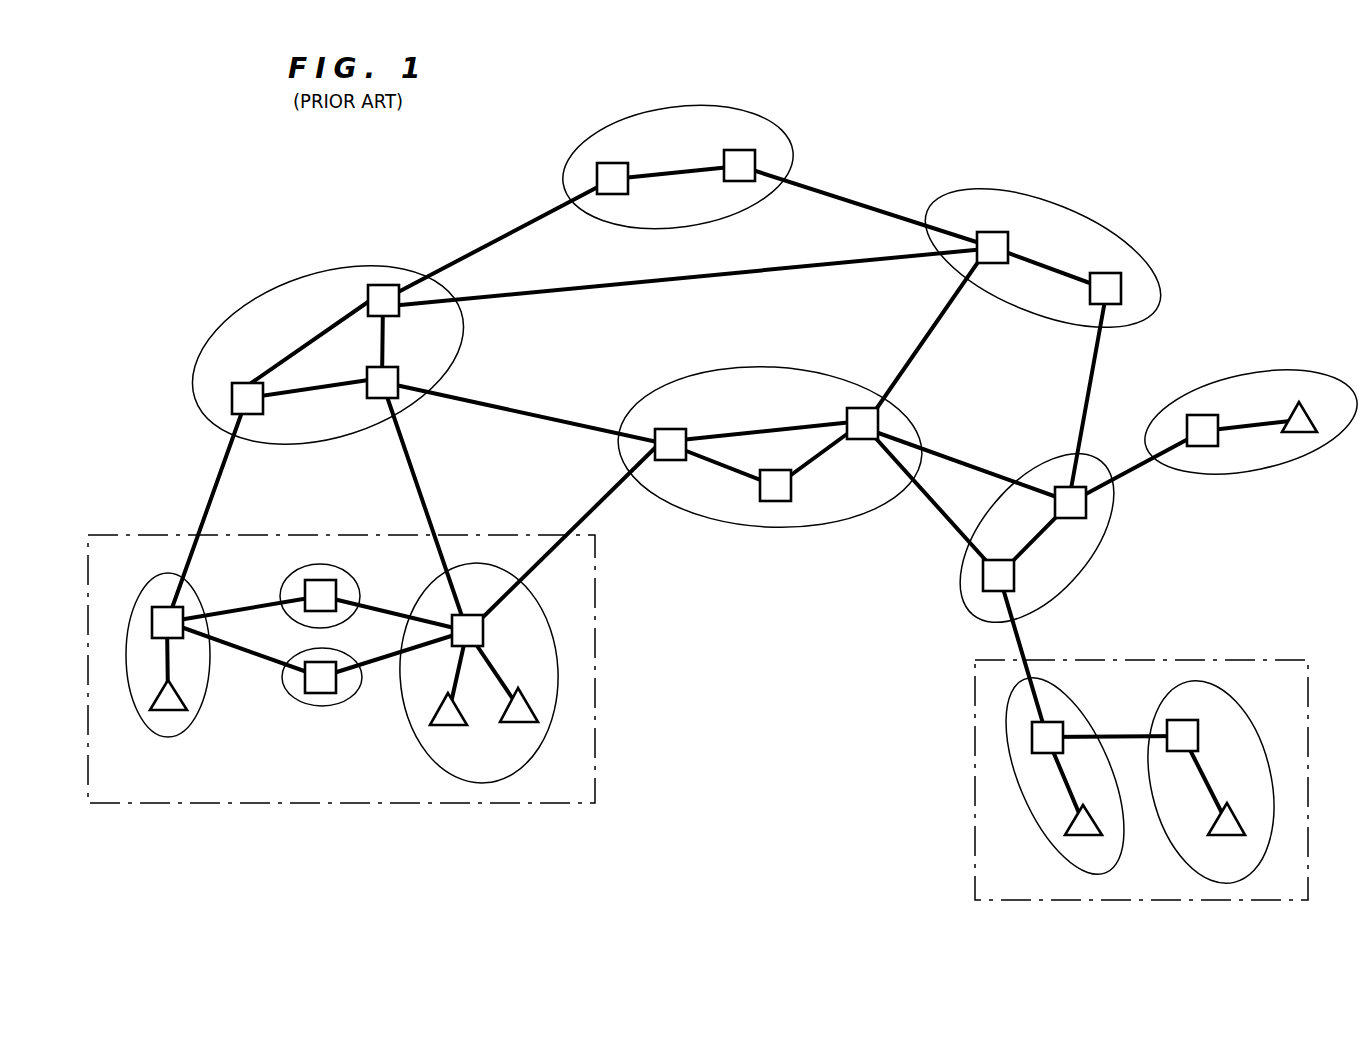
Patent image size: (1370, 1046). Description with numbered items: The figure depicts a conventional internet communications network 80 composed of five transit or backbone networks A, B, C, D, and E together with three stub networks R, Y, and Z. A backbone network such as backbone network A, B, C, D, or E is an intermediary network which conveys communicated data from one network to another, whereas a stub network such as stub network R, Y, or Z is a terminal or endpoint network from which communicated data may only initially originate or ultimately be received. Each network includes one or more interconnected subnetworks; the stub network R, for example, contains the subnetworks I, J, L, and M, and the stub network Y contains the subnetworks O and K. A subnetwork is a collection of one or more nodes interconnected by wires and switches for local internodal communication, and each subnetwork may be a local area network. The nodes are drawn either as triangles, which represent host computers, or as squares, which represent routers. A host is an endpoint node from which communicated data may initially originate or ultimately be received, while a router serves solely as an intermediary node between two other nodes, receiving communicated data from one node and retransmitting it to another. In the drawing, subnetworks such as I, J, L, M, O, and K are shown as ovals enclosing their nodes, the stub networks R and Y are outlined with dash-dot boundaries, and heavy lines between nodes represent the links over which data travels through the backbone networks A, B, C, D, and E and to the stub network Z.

The internet communications network 80 is at (356, 210).
The backbone network A is at (463, 342).
The backbone network B is at (792, 142).
The backbone network C is at (1110, 227).
The backbone network D is at (793, 365).
The backbone network E is at (1094, 552).
The stub network Z is at (1297, 370).
The stub network R is at (595, 707).
The subnetwork I is at (185, 720).
The subnetwork L is at (282, 582).
The subnetwork M is at (322, 705).
The subnetwork J is at (430, 750).
The stub network Y is at (975, 780).
The subnetwork O is at (1040, 822).
The subnetwork K is at (1250, 732).